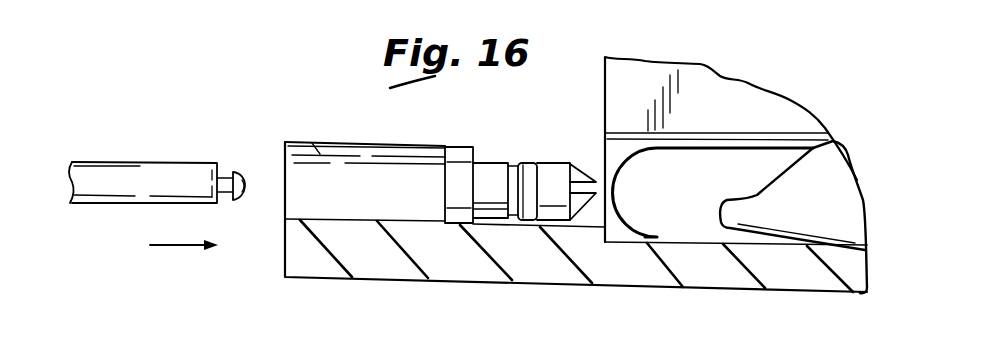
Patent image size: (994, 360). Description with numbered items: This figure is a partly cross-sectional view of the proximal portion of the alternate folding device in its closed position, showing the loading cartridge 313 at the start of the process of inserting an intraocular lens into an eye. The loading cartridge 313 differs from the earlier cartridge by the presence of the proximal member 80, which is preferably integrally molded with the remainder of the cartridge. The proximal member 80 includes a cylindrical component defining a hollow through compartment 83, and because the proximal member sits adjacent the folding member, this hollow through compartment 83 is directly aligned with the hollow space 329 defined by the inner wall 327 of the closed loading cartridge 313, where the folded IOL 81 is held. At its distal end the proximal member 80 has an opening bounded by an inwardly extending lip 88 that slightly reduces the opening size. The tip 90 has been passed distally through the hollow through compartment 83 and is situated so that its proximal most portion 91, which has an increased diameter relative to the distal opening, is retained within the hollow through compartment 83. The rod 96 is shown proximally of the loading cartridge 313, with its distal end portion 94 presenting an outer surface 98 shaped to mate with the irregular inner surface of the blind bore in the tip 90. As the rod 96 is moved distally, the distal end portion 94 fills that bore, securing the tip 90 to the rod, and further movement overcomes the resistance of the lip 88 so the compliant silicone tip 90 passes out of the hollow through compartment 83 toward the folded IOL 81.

The proximal member 80 is at (344, 116).
The folded IOL 81 is at (803, 224).
The hollow through compartment 83 is at (290, 168).
The inwardly extending lip 88 is at (487, 156).
The tip 90 is at (568, 142).
The proximal most portion of tip 91 is at (452, 155).
The distal end portion of rod 94 is at (217, 163).
The rod 96 is at (106, 146).
The outer surface of distal end portion 98 is at (218, 204).
The loading cartridge 313 is at (711, 58).
The inner wall 327 is at (690, 243).
The hollow space 329 is at (678, 190).